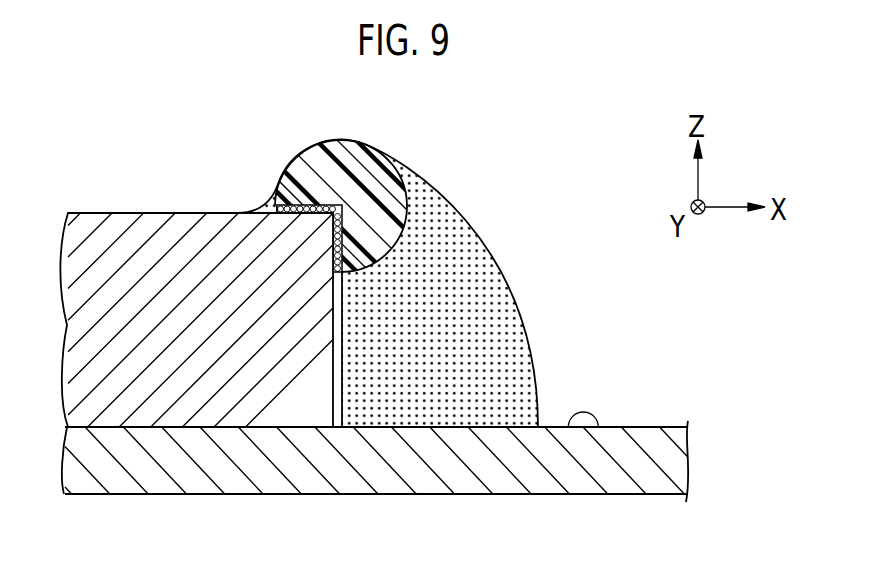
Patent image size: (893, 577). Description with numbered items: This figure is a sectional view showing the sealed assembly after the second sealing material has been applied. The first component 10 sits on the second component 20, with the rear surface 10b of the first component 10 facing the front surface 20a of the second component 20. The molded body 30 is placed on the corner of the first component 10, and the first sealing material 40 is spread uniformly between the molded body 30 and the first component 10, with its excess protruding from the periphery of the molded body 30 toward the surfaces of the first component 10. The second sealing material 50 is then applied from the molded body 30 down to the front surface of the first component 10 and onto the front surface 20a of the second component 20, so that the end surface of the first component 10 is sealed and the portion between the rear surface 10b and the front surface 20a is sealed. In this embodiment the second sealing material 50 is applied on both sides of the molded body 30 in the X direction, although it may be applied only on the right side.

The first component 10 is at (125, 217).
The rear surface of the first component 10b is at (193, 427).
The second component 20 is at (642, 437).
The front surface of the second component 20a is at (569, 427).
The molded body 30 is at (397, 198).
The first sealing material 40 is at (308, 215).
The second sealing material 50 is at (513, 330).